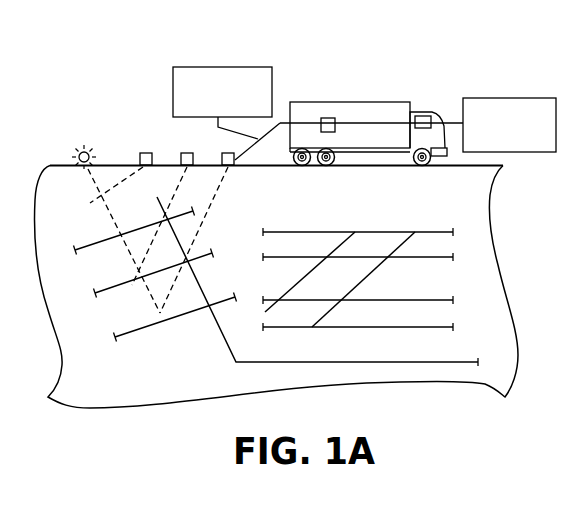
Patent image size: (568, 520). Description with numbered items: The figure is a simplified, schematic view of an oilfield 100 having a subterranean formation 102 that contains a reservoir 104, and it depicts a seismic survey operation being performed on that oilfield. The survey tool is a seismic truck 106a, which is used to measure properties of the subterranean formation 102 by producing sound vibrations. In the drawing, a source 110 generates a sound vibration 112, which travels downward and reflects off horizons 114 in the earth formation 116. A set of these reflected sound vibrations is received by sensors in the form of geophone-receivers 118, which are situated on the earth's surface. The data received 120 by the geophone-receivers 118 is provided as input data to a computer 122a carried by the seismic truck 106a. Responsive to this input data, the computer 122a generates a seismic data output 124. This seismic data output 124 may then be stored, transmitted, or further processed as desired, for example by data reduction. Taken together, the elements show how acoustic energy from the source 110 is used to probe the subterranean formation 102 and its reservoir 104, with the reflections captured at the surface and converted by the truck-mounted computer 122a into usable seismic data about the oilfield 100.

The oilfield 100 is at (452, 75).
The subterranean formation 102 is at (366, 255).
The reservoir 104 is at (431, 294).
The seismic truck 106a is at (386, 100).
The source 110 is at (82, 150).
The sound vibration 112 is at (85, 204).
The horizons 114 is at (192, 213).
The earth formation 116 is at (222, 338).
The geophone-receivers 118 is at (227, 153).
The data received 120 is at (212, 66).
The computer 122a is at (330, 117).
The seismic data output 124 is at (507, 97).